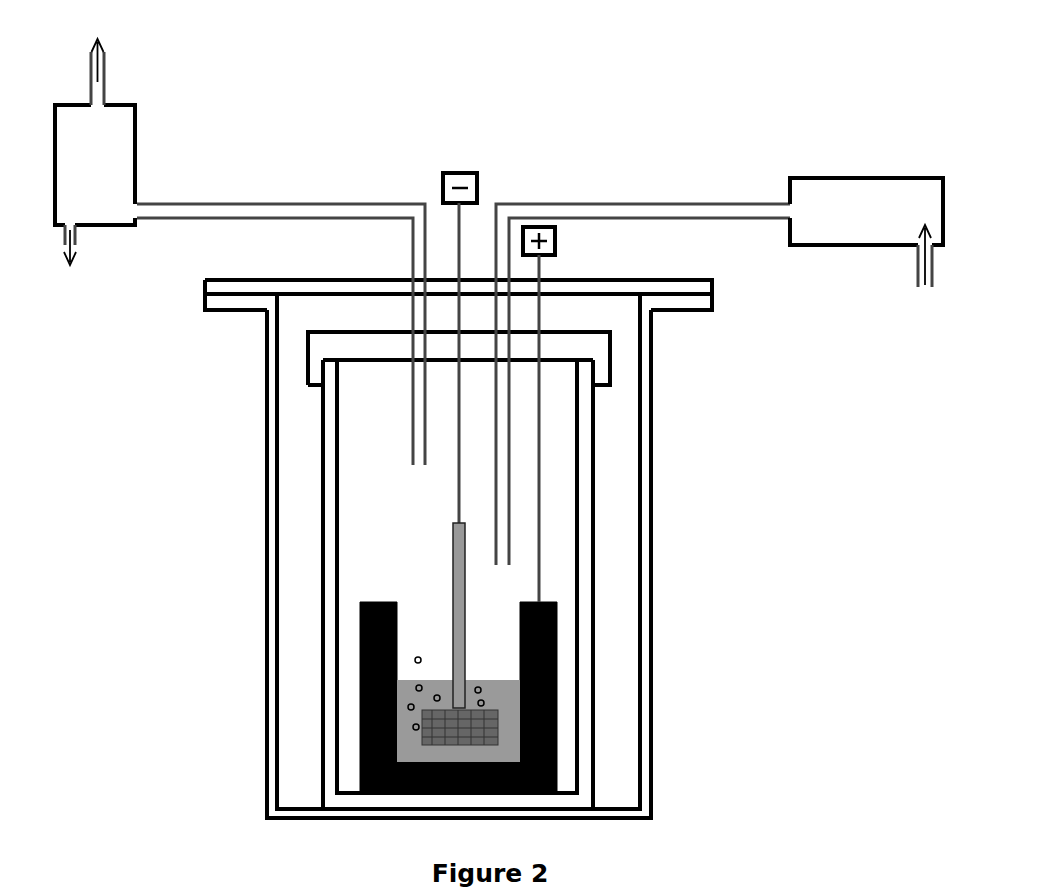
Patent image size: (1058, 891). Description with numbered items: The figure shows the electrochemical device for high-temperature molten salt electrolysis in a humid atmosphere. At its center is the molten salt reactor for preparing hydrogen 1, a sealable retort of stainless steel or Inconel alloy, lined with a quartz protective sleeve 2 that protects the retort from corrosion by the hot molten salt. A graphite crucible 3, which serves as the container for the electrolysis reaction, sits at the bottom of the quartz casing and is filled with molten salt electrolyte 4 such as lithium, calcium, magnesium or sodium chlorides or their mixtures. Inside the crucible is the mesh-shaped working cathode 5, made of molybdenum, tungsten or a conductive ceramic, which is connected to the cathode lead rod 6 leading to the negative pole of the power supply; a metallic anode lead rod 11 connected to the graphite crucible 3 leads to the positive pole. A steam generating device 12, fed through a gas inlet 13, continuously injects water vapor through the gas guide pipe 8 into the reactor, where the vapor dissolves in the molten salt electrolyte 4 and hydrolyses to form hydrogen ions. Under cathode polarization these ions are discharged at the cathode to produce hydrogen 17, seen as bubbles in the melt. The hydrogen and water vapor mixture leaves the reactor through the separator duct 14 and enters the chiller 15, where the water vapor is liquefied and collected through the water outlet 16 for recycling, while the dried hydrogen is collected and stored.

The molten salt reactor for preparing hydrogen 1 is at (645, 727).
The quartz protective sleeve 2 is at (597, 347).
The graphite crucible 3 is at (392, 600).
The molten salt electrolyte 4 is at (510, 688).
The working cathode 5 is at (477, 738).
The cathode lead rod 6 is at (458, 455).
The gas guide pipe 8 is at (665, 212).
The anode lead rod 11 is at (540, 450).
The steam generating device 12 is at (875, 217).
The gas inlet 13 is at (913, 267).
The separator duct 14 is at (412, 412).
The chiller 15 is at (107, 157).
The water outlet 16 is at (77, 233).
The hydrogen 17 is at (417, 657).